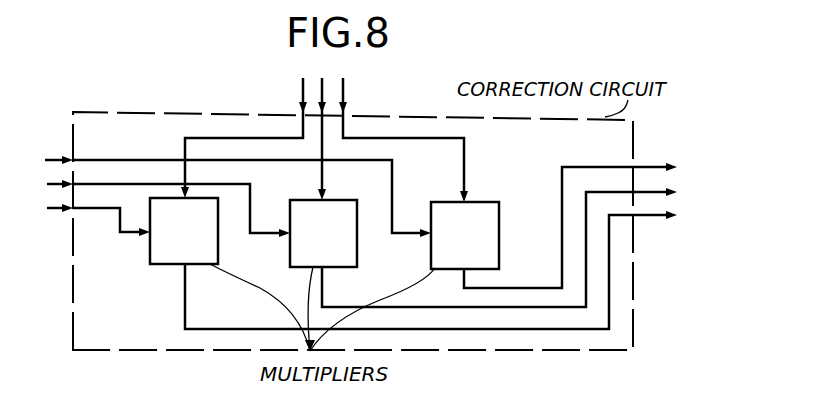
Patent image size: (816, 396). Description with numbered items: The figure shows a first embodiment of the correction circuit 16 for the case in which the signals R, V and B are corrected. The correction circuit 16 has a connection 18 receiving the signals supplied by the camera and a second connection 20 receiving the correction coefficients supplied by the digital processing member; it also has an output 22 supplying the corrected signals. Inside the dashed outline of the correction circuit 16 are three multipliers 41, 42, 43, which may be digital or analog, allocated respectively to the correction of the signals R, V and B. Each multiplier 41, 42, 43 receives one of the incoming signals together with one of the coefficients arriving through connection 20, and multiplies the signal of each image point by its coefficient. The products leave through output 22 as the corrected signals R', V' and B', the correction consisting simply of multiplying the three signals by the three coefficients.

The correction circuit 16 is at (143, 112).
The input receiving the camera signal 18 is at (64, 150).
The input receiving the correction coefficient 20 is at (352, 104).
The output 22 is at (644, 160).
The multiplier 41 is at (440, 256).
The multiplier 42 is at (294, 256).
The multiplier 43 is at (155, 252).